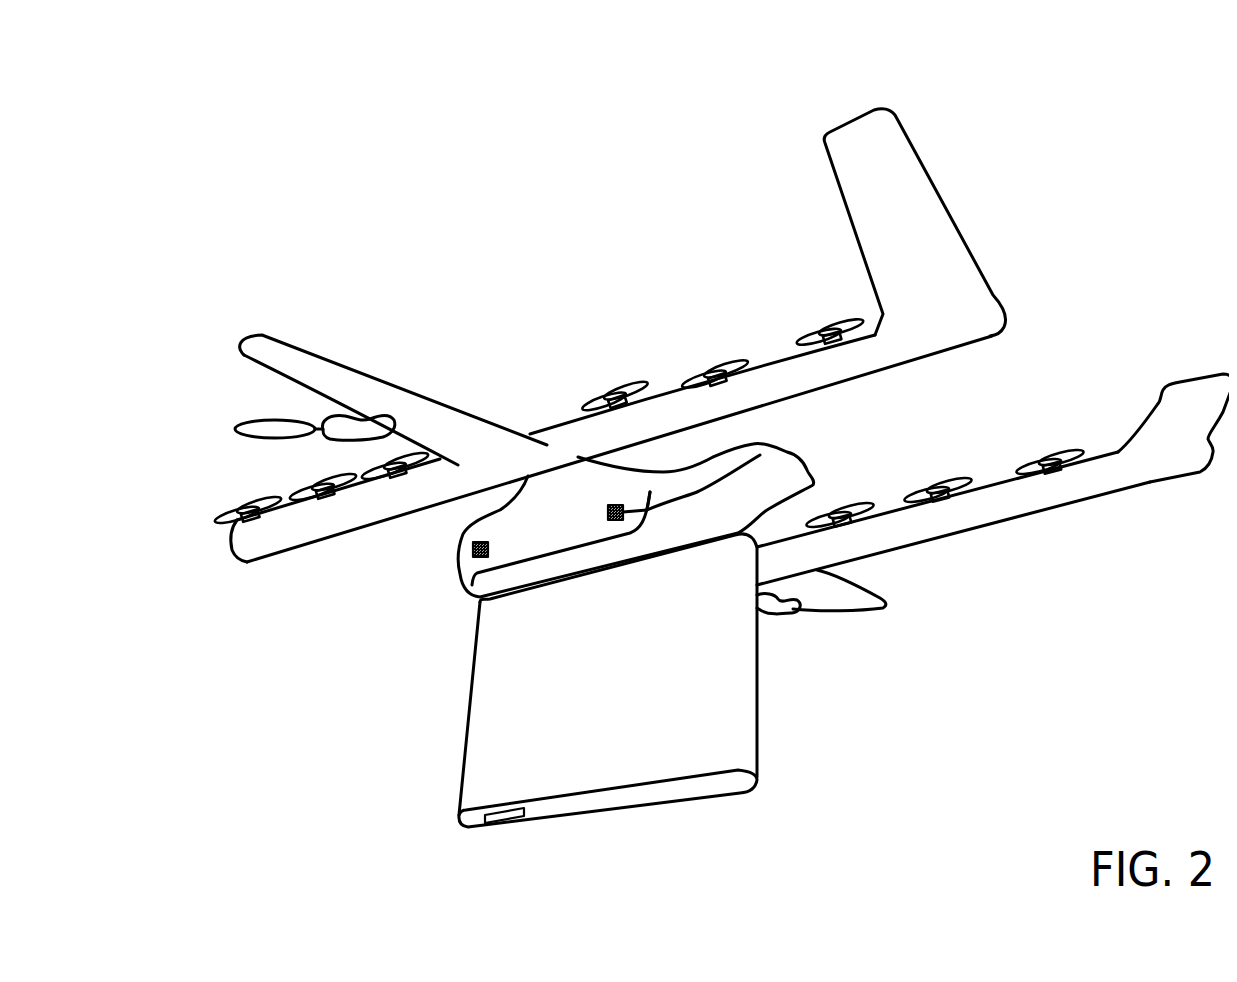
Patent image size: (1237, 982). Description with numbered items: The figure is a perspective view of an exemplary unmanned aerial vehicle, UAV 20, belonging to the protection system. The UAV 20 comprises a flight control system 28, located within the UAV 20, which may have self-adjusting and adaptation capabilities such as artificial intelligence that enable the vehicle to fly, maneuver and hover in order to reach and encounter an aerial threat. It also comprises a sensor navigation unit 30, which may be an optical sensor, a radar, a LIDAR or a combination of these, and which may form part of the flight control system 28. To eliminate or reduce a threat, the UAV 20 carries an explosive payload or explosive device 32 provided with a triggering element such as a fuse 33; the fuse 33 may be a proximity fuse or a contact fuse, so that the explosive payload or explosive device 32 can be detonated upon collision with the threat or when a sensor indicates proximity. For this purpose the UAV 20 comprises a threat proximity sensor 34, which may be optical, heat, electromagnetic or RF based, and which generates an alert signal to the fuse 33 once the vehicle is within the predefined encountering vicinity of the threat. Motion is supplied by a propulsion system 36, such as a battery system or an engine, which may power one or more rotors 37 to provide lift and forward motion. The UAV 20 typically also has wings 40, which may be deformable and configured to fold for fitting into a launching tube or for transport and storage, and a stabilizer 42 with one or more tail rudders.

The UAV 20 is at (455, 122).
The flight control system 28 is at (543, 535).
The sensor navigation unit 30 is at (535, 507).
The explosive payload or explosive device 32 is at (463, 697).
The fuse 33 is at (462, 824).
The threat proximity sensor 34 is at (472, 548).
The propulsion system 36 is at (340, 400).
The rotors 37 is at (262, 420).
The wings 40 is at (350, 348).
The stabilizer 42 is at (846, 113).